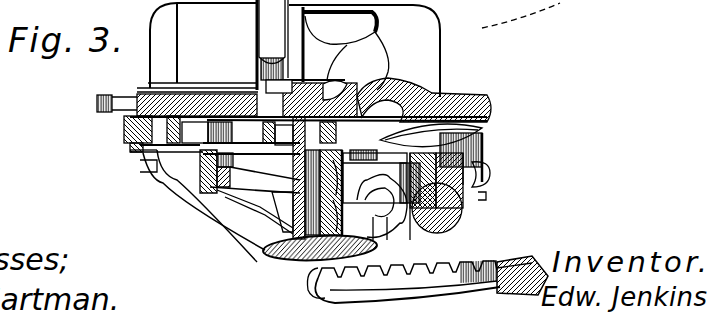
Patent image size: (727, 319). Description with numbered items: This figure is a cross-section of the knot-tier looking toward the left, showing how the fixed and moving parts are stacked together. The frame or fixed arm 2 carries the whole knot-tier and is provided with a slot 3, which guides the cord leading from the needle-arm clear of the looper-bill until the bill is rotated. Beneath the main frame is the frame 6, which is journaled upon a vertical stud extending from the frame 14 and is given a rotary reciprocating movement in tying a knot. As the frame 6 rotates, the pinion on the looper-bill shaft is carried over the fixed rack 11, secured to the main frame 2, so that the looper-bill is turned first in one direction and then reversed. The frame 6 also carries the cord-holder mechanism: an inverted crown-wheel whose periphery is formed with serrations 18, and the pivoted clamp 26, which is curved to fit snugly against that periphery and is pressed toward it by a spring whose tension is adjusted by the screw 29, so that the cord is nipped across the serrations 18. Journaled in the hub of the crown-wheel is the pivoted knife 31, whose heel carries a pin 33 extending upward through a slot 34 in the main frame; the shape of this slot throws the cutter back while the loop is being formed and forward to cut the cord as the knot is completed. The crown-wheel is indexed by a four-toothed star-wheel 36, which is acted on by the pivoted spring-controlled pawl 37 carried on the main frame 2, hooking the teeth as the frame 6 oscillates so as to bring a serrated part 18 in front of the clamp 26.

The frame or fixed arm 2 is at (268, 56).
The slot 3 is at (272, 40).
The frame 6 is at (472, 240).
The rack 11 is at (427, 275).
The frame 14 is at (283, 262).
The serrations 18 is at (200, 180).
The pivoted clamp 26 is at (490, 199).
The screw 29 is at (491, 174).
The pivoted knife 31 is at (424, 112).
The pin 33 is at (279, 86).
The slot 34 is at (308, 99).
The four-toothed star-wheel 36 is at (299, 134).
The pivoted spring-controlled pawl 37 is at (212, 135).